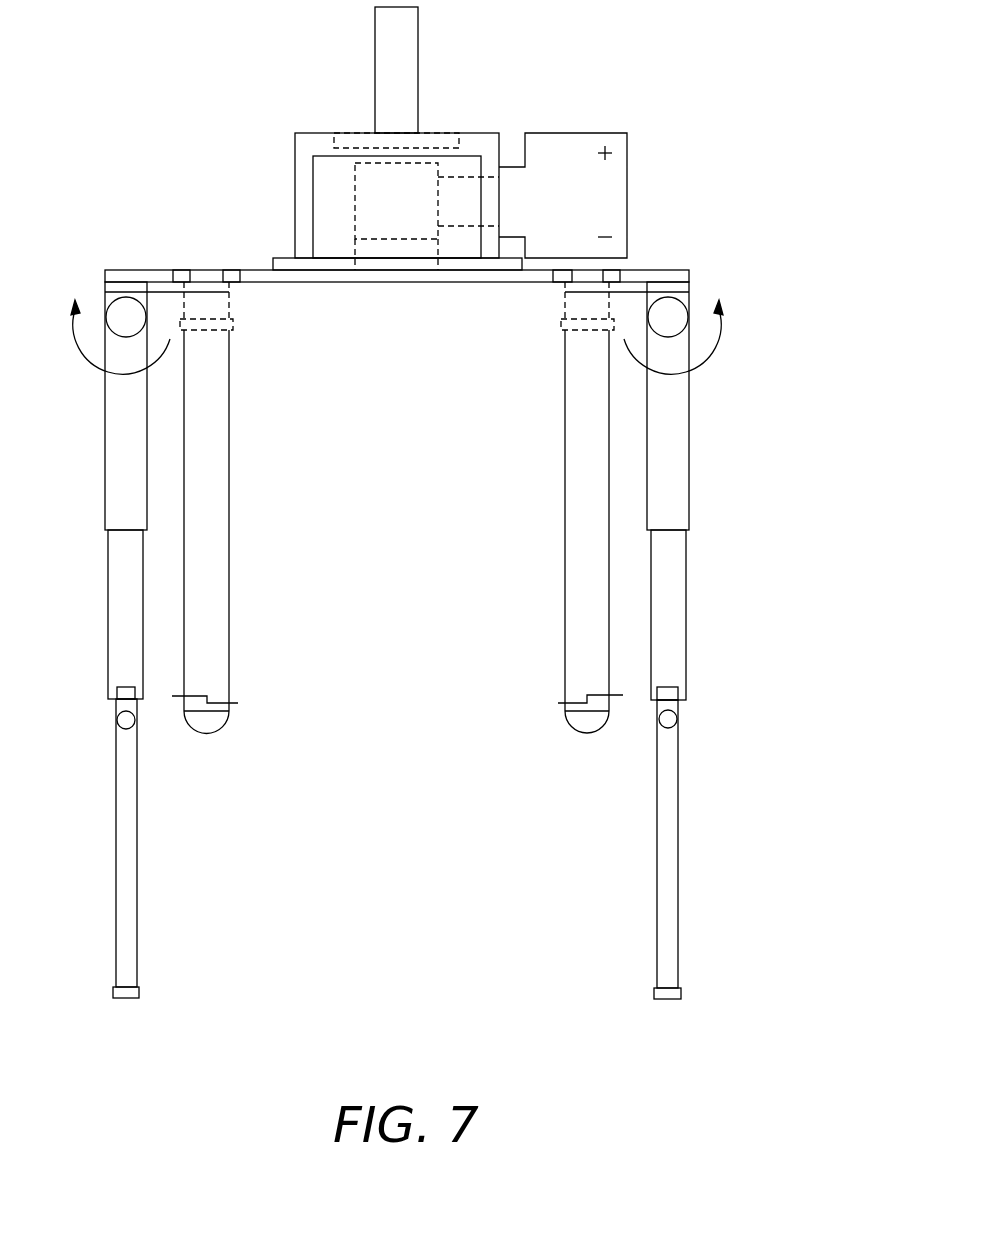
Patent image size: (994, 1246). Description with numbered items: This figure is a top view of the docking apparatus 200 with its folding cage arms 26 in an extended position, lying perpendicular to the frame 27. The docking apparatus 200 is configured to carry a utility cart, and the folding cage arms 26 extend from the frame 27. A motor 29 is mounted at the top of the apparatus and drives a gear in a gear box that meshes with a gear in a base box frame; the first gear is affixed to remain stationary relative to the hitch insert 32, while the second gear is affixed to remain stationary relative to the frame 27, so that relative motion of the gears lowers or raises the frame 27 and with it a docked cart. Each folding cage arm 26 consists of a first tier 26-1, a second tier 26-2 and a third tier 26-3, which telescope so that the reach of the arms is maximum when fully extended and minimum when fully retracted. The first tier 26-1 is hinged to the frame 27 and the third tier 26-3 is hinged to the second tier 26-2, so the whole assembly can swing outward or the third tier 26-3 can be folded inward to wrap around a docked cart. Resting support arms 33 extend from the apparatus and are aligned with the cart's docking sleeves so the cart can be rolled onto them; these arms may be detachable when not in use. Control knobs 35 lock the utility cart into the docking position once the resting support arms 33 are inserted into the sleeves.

The docking apparatus 200 is at (198, 133).
The hitch insert 32 is at (405, 75).
The motor 29 is at (602, 193).
The first tier 26-1 is at (673, 443).
The second tier 26-2 is at (673, 580).
The third tier 26-3 is at (665, 843).
The folding cage arms 26 is at (697, 626).
The frame 27 is at (668, 719).
The resting support arms 33 is at (585, 483).
The control knobs 35 is at (207, 732).